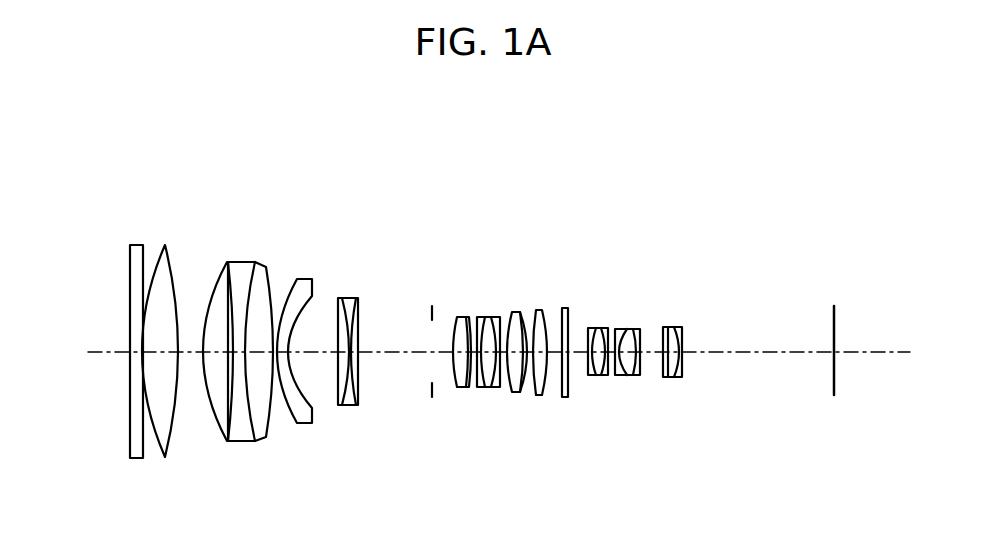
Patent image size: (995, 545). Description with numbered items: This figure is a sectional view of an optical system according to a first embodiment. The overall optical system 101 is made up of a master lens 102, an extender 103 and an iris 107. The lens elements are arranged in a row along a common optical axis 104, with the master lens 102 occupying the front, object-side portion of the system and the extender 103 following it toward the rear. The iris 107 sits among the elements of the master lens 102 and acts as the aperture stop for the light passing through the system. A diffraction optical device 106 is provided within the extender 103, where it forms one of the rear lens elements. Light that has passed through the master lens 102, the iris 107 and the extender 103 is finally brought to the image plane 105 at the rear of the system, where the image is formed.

The optical system 101 is at (693, 233).
The master lens 102 is at (121, 470).
The extender 103 is at (587, 468).
The optical axis 104 is at (100, 351).
The image plane 105 is at (833, 340).
The diffraction optical device 106 is at (663, 327).
The iris 107 is at (433, 312).